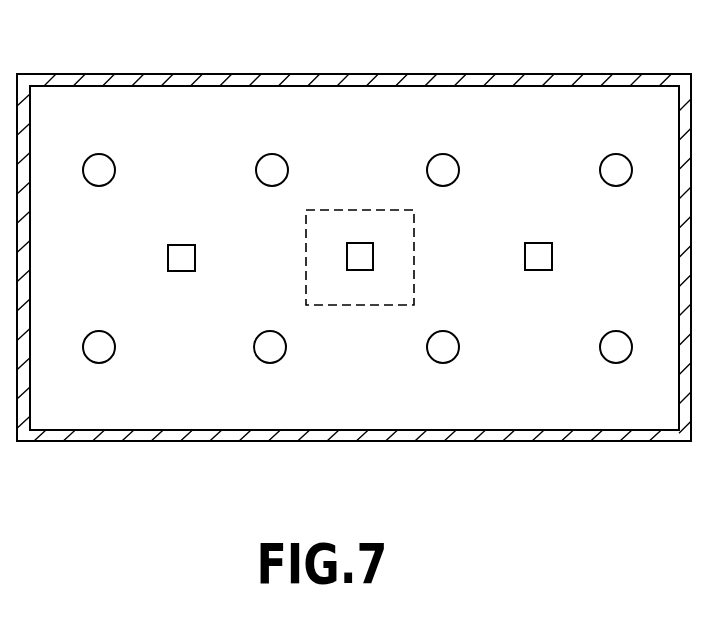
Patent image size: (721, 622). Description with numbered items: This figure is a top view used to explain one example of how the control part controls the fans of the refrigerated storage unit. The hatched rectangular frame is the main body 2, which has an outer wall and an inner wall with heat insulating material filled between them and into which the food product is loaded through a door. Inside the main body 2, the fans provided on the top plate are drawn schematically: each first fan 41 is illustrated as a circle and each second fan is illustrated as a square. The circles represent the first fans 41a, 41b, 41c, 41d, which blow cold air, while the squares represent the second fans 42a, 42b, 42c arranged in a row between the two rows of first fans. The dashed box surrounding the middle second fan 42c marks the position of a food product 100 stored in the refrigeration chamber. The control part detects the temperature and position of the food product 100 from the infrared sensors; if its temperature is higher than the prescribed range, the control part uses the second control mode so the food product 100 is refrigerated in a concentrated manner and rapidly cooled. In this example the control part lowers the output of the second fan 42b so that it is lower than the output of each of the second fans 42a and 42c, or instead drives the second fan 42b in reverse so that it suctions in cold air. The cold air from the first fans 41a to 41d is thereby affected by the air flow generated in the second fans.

The main body 2 is at (590, 82).
The first fan 41 is at (98, 162).
The first fan 41a is at (272, 162).
The first fan 41b is at (443, 162).
The first fan 41c is at (270, 353).
The first fan 41d is at (446, 353).
The second fan 42a is at (182, 262).
The second fan 42b is at (541, 262).
The second fan 42c is at (357, 255).
The food product 100 is at (358, 305).